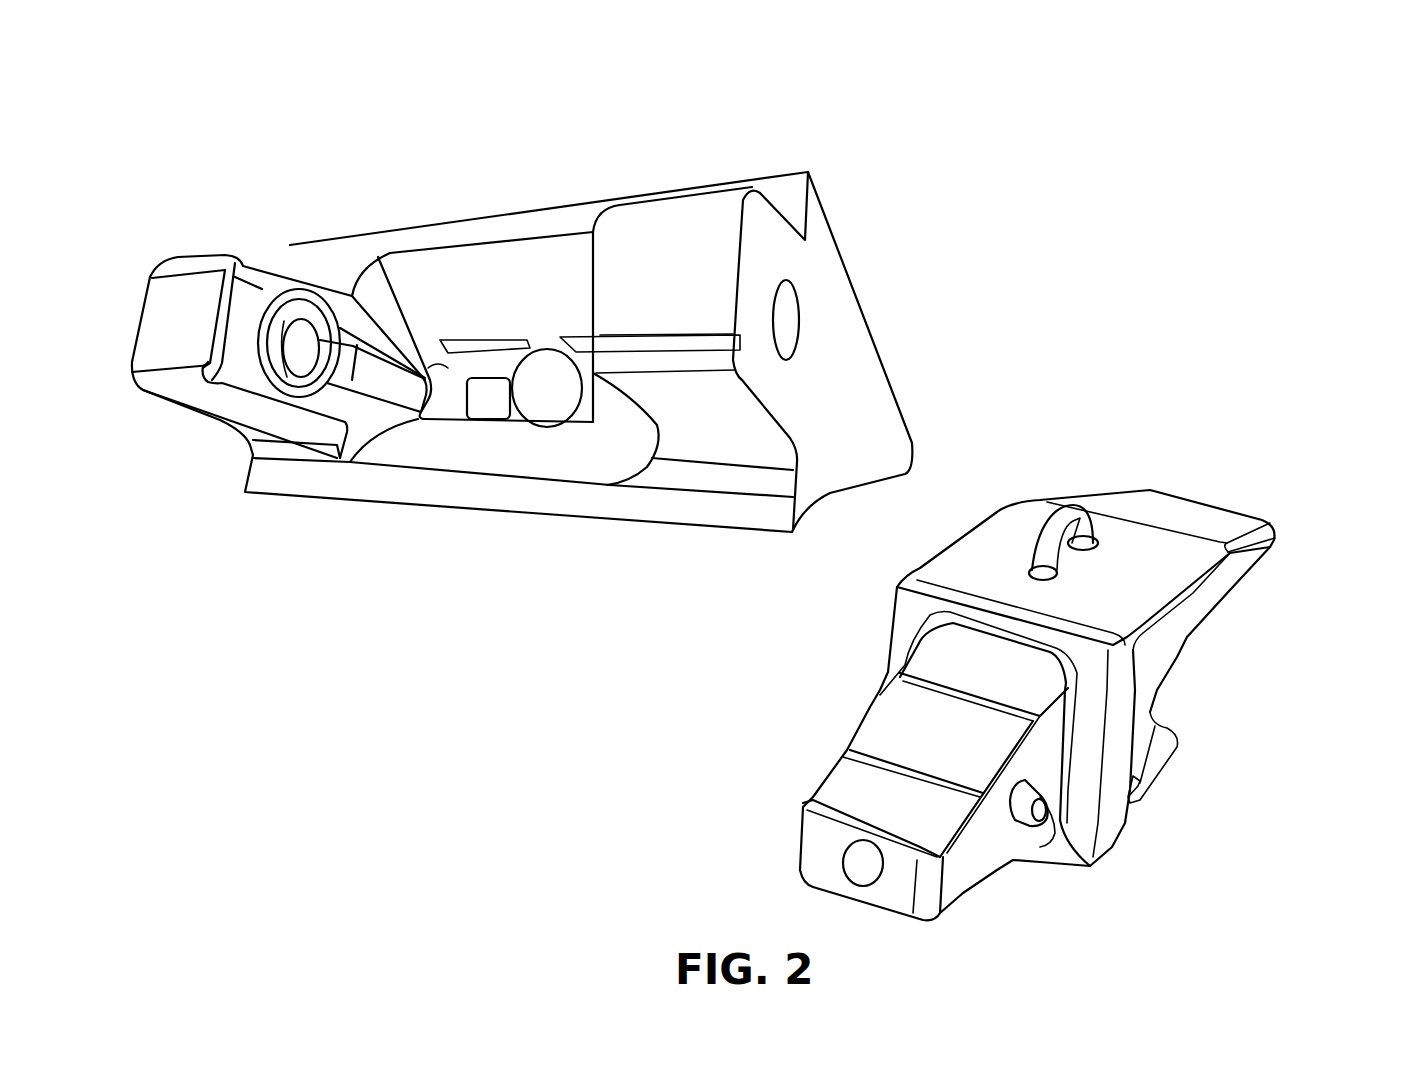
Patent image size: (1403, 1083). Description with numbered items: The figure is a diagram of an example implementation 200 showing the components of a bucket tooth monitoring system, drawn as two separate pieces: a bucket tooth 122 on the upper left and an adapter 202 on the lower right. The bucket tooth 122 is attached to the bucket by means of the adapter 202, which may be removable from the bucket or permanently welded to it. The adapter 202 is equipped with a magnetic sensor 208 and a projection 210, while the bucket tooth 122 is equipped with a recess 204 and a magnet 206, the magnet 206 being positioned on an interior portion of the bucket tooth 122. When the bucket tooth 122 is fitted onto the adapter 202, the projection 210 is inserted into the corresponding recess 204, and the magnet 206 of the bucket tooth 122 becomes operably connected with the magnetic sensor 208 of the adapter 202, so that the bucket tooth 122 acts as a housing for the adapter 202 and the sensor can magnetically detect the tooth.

The example implementation 200 is at (236, 91).
The bucket tooth 122 is at (416, 229).
The adapter 202 is at (1250, 507).
The recess 204 is at (300, 353).
The magnet 206 is at (533, 397).
The magnetic sensor 208 is at (863, 858).
The projection 210 is at (1043, 810).